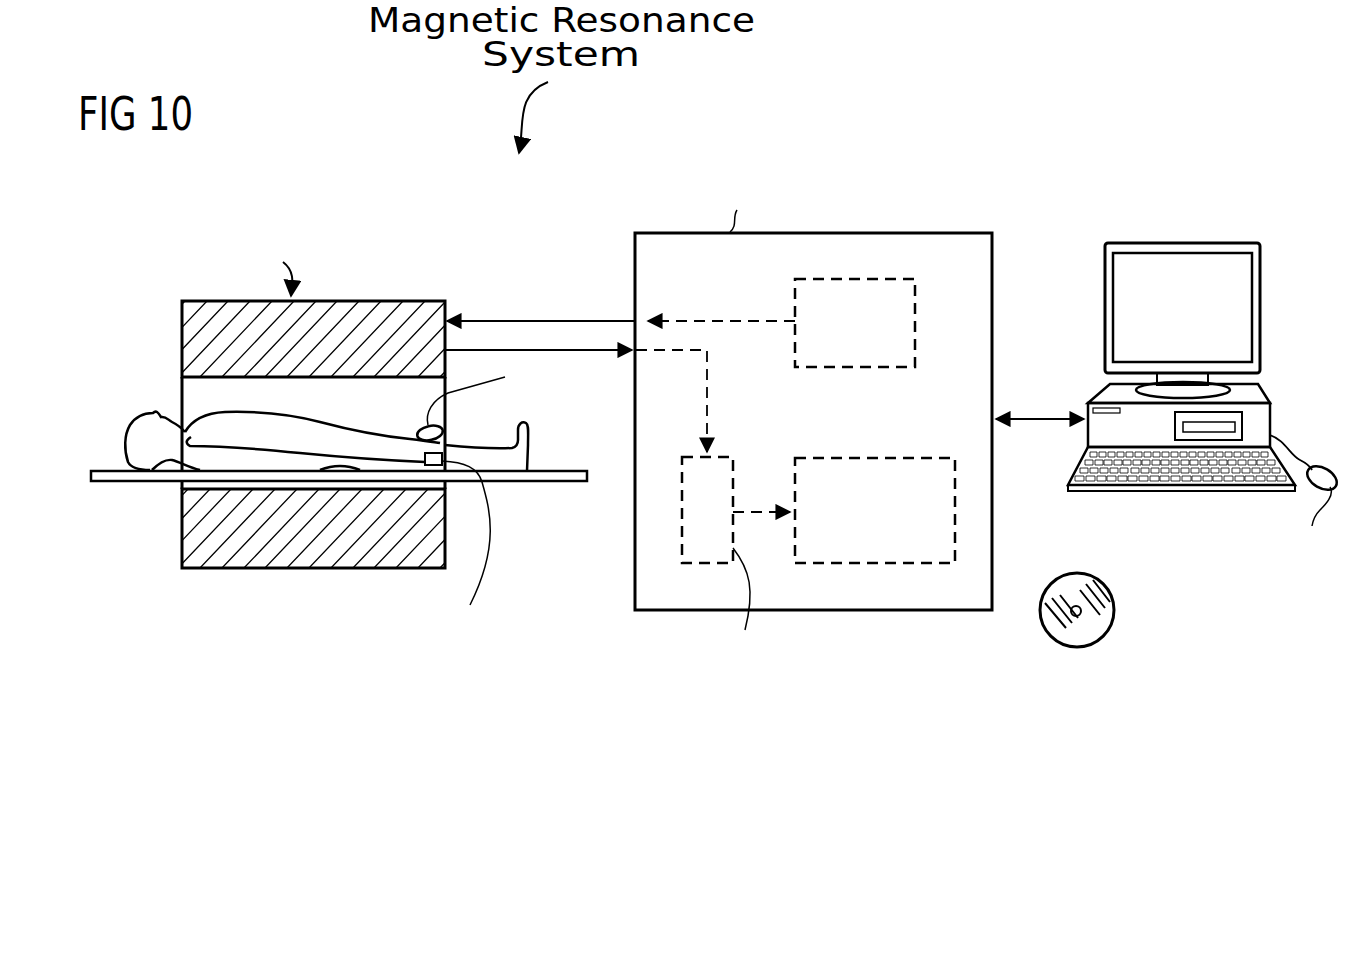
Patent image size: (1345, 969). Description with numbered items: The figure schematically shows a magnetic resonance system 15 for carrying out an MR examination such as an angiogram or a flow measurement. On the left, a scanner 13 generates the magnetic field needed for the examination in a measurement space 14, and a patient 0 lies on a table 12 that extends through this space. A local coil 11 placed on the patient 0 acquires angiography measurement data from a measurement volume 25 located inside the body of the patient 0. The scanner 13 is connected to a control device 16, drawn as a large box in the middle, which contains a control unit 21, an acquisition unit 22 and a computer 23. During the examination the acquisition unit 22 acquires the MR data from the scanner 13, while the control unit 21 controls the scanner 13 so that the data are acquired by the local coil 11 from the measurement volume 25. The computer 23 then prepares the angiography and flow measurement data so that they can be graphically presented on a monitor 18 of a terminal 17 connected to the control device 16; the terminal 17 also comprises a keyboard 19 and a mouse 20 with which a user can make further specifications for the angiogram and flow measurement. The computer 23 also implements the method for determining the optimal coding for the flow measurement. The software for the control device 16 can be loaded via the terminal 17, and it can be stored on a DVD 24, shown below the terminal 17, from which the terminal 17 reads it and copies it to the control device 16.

The patient 0 is at (127, 440).
The local coil 11 is at (440, 432).
The table 12 is at (501, 483).
The scanner 13 is at (320, 297).
The measurement space 14 is at (193, 397).
The magnetic resonance system 15 is at (562, 171).
The control device 16 is at (810, 233).
The terminal 17 is at (1197, 243).
The monitor 18 is at (1157, 252).
The keyboard 19 is at (1183, 489).
The mouse 20 is at (1305, 494).
The control unit 21 is at (915, 331).
The acquisition unit 22 is at (715, 457).
The computer 23 is at (872, 458).
The DVD 24 is at (1077, 647).
The measurement volume 25 is at (437, 466).